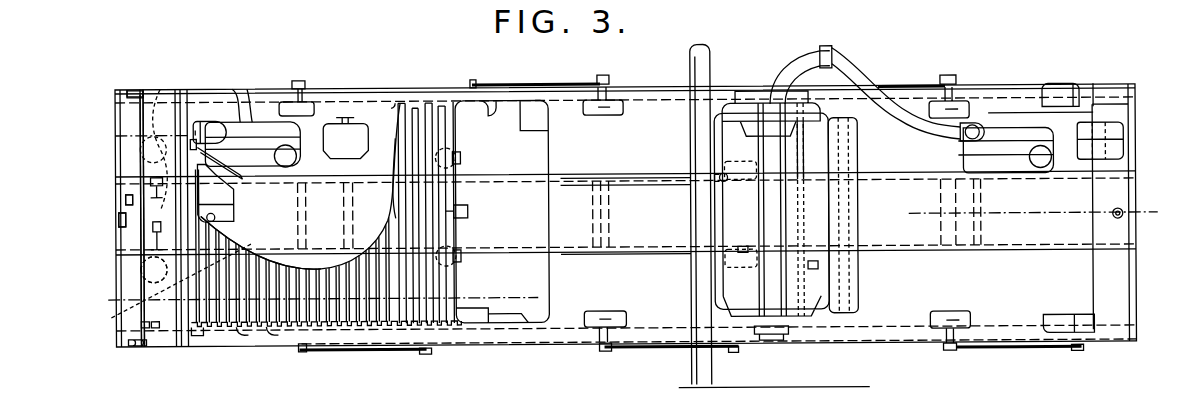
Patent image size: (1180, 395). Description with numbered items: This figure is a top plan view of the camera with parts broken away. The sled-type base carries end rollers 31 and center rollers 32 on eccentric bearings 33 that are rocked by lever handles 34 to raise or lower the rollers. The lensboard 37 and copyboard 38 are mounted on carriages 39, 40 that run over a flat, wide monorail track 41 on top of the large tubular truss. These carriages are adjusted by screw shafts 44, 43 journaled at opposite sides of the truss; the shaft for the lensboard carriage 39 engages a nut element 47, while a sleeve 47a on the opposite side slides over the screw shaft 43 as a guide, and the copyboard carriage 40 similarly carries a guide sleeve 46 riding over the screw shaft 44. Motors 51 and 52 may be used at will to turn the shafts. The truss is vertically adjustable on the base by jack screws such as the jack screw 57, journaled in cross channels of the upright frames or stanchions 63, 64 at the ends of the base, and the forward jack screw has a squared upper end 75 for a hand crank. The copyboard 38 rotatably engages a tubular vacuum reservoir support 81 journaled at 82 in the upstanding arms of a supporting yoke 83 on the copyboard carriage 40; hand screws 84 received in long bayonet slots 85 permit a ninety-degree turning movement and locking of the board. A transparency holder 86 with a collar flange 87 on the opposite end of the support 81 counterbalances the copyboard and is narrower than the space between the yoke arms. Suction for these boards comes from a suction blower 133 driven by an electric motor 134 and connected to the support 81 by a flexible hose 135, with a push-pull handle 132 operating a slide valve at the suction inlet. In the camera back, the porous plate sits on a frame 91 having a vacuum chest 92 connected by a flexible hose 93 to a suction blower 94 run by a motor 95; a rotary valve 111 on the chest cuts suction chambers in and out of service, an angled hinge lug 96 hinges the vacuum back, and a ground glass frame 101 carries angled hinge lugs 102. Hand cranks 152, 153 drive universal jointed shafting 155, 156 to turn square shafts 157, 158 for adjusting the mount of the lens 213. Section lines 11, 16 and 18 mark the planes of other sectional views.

The section line 11- 11 is at (540, 284).
The section line 16- 16 is at (1160, 207).
The section line 18- 18 is at (871, 380).
The end rollers 31 is at (310, 103).
The center rollers 32 is at (622, 114).
The eccentric bearings 33 is at (302, 82).
The lever handles 34 is at (236, 88).
The lensboard 37 is at (448, 104).
The copyboard 38 is at (690, 76).
The lensboard carriage 39 is at (545, 152).
The copyboard carriage 40 is at (840, 72).
The monorail track 41 is at (662, 192).
The screw shaft 43 is at (160, 195).
The screw shaft 44 is at (158, 236).
The guide sleeve 46 is at (745, 250).
The nut element 47 is at (462, 256).
The sleeve 47a is at (468, 154).
The motor 51 is at (143, 136).
The motor 52 is at (140, 266).
The jack screw 57 is at (214, 218).
The upright frame or stanchion 63 is at (197, 340).
The upright frame or stanchion 64 is at (1122, 311).
The squared upper end 75 is at (1122, 222).
The tubular vacuum reservoir support 81 is at (745, 208).
The journal 82 is at (773, 340).
The supporting yoke or pedestal 83 is at (795, 107).
The hand screws 84 is at (723, 177).
The bayonet slots 85 is at (770, 192).
The transparency holder 86 is at (872, 296).
The neck or collar flange 87 is at (810, 180).
The frame 91 is at (138, 163).
The vacuum chest 92 is at (128, 198).
The flexible hose 93 is at (198, 125).
The suction blower 94 is at (257, 130).
The motor 95 is at (345, 150).
The angled hinge lug 96 is at (150, 91).
The ground glass frame 101 is at (143, 116).
The angled hinge lugs 102 is at (145, 347).
The rotary valve 111 is at (120, 223).
The push-pull handle 132 is at (820, 270).
The suction blower 133 is at (1020, 135).
The electric motor 134 is at (1085, 142).
The flexible hose 135 is at (910, 118).
The hand crank 152 is at (160, 95).
The hand crank 153 is at (161, 287).
The universal jointed shafting 155 is at (237, 176).
The universal jointed shafting 156 is at (258, 233).
The square shaft 157 is at (612, 169).
The square shaft 158 is at (617, 258).
The lens 213 is at (468, 215).